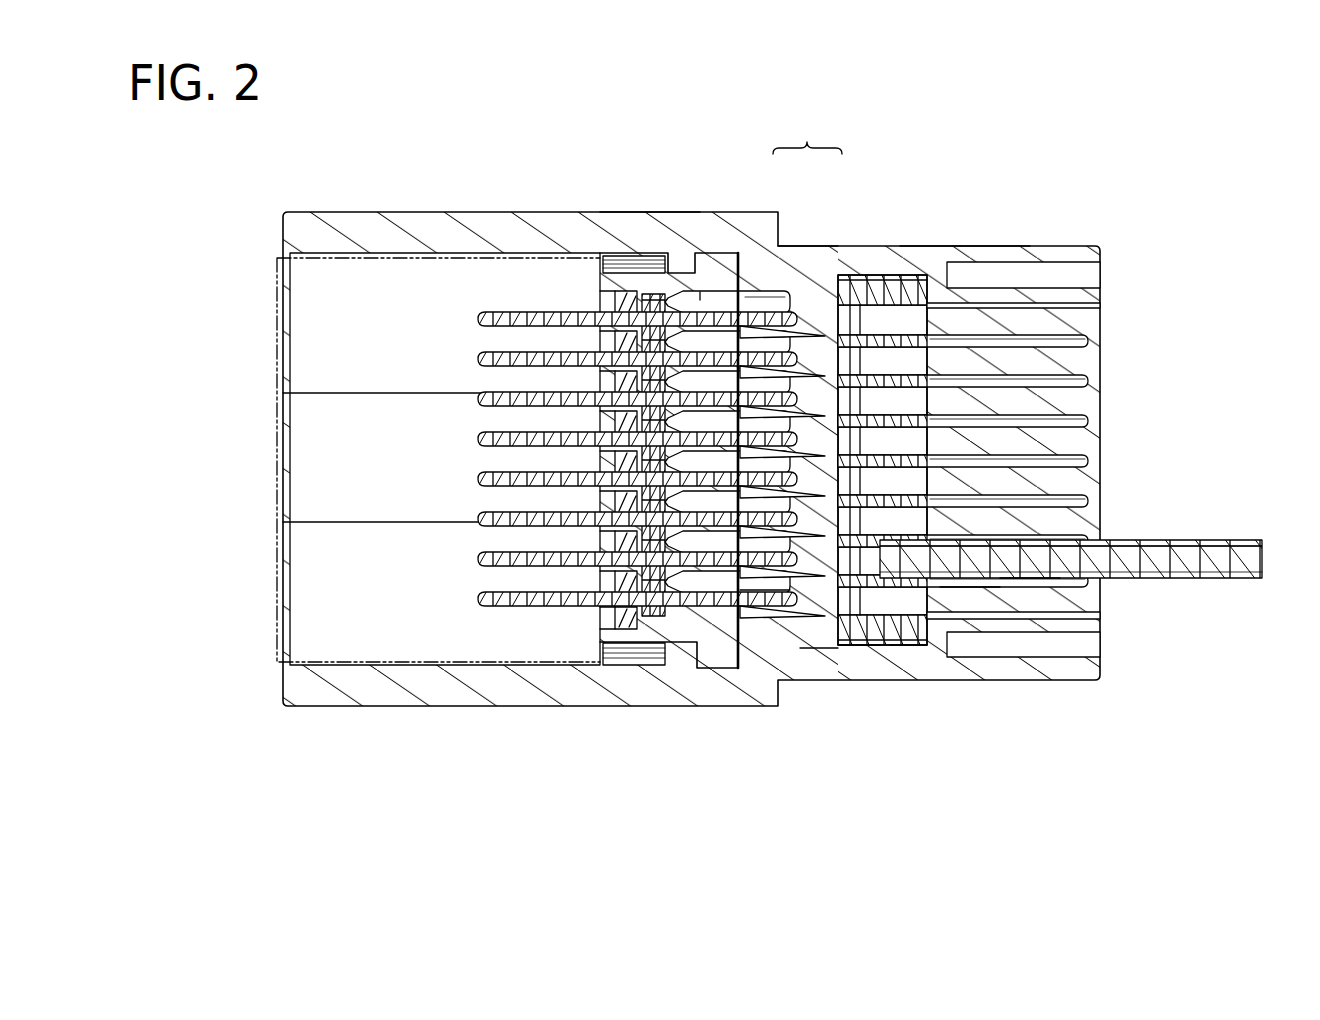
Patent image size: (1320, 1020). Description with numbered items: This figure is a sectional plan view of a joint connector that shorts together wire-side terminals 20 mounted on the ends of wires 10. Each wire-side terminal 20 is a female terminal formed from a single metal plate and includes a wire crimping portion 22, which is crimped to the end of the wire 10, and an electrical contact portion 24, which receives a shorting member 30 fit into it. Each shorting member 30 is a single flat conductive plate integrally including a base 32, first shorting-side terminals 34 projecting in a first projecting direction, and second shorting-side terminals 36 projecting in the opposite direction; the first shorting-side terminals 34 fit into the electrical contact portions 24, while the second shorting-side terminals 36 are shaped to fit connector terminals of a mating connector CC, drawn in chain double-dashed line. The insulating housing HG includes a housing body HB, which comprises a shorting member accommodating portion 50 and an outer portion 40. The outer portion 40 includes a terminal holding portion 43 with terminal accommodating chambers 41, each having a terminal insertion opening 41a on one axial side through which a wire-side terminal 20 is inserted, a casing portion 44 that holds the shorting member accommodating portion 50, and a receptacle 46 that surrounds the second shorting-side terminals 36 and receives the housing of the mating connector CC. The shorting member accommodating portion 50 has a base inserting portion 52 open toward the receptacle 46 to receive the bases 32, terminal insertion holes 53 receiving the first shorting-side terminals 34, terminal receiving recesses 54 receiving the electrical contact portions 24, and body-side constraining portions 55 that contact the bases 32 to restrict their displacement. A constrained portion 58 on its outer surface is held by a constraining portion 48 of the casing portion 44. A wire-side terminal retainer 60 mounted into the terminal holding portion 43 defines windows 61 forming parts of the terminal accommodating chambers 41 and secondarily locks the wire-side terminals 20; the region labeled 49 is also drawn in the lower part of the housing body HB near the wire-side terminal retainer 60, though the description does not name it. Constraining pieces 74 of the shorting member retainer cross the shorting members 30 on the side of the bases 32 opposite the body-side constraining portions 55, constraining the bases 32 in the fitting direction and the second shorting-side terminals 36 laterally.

The wire 10 is at (1190, 545).
The wire-side terminal 20 is at (1030, 584).
The wire crimping portion 22 is at (975, 590).
The electrical contact portion 24 is at (832, 650).
The shorting member 30 is at (578, 300).
The base 32 is at (634, 650).
The first shorting-side terminal 34 is at (795, 400).
The second shorting-side terminal 36 is at (478, 559).
The outer portion 40 is at (792, 242).
The terminal accommodating chamber 41 is at (1028, 400).
The terminal insertion opening 41a is at (1070, 540).
The terminal holding portion 43 is at (978, 242).
The casing portion 44 is at (658, 208).
The receptacle 46 is at (392, 706).
The constraining portion 48 is at (740, 256).
The holder bottom 49 is at (900, 660).
The shorting member accommodating portion 50 is at (748, 268).
The base inserting portion 52 is at (634, 256).
The terminal insertion hole 53 is at (674, 296).
The terminal receiving recess 54 is at (748, 600).
The body-side constraining portion 55 is at (648, 300).
The constrained portion 58 is at (700, 292).
The wire-side terminal retainer 60 is at (860, 656).
The window 61 is at (880, 372).
The constraining piece 74 is at (616, 624).
The mating connector CC is at (410, 262).
The housing body HB is at (807, 135).
The insulating housing HG is at (934, 182).